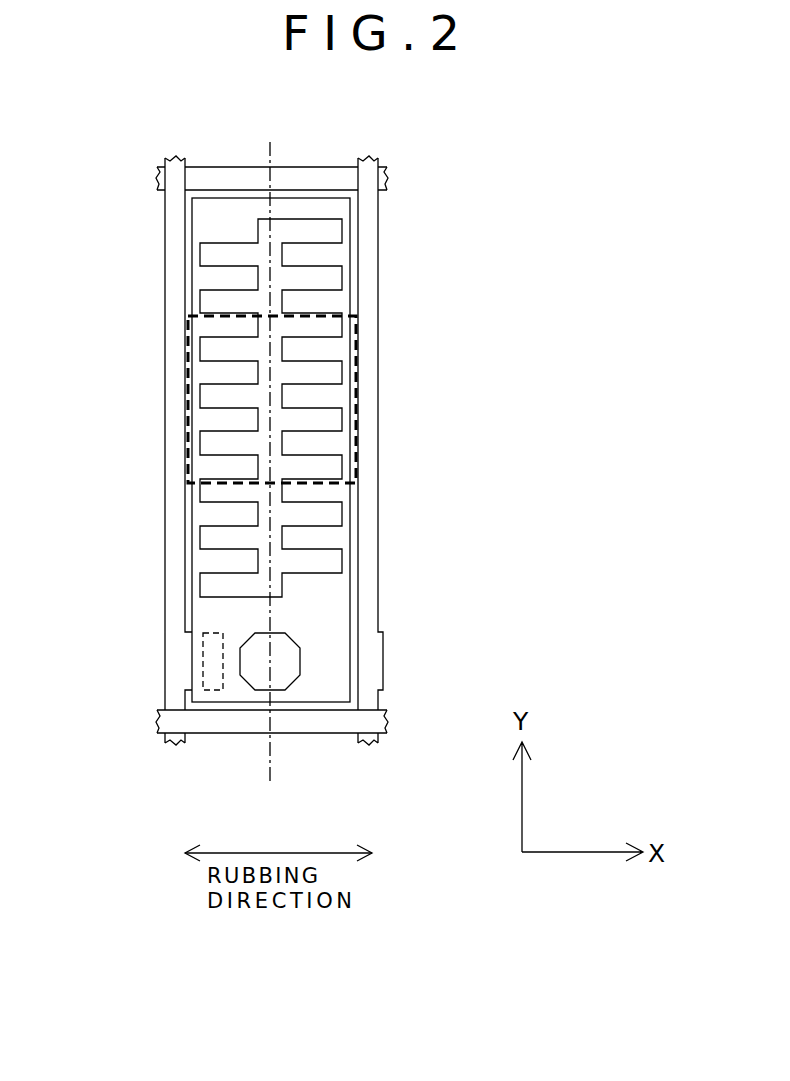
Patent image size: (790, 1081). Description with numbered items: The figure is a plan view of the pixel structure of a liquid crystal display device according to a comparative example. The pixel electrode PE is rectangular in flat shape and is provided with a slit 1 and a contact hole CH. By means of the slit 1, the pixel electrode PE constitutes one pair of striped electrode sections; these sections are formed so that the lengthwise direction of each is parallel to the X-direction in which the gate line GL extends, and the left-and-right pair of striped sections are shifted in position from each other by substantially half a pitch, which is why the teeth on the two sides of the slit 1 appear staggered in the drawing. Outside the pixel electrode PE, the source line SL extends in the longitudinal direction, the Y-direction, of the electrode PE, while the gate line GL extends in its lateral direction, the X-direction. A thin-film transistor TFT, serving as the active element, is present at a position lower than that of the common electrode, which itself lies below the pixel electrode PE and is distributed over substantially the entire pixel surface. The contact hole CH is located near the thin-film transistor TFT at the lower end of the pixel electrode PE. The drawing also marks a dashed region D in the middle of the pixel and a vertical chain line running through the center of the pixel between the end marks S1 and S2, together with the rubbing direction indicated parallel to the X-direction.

The slit 1 is at (238, 257).
The source line SL is at (365, 275).
The gate line GL is at (232, 725).
The pixel electrode PE is at (327, 610).
The region D is at (188, 369).
The thin-film transistor TFT is at (212, 660).
The contact hole CH is at (277, 672).
The section line end S1 is at (271, 478).
The section line end S2 is at (271, 126).